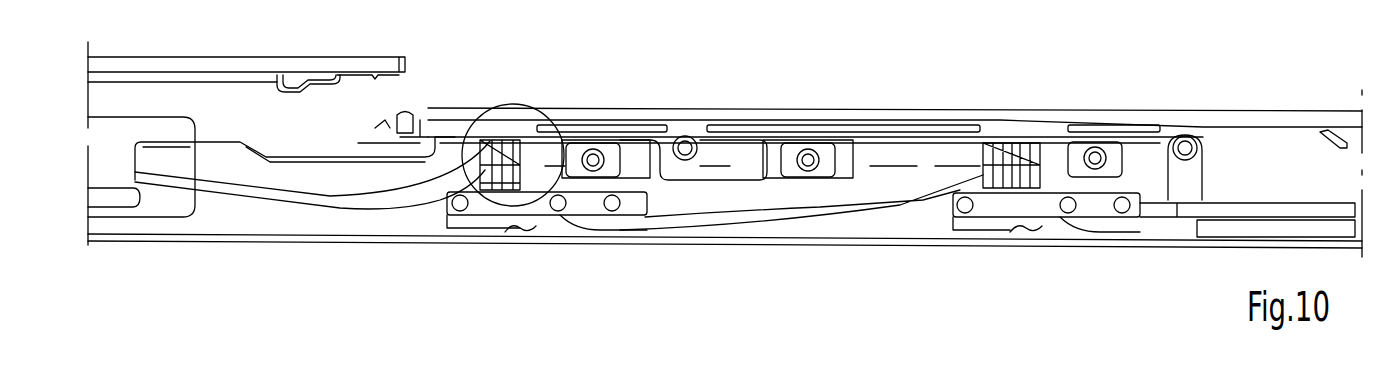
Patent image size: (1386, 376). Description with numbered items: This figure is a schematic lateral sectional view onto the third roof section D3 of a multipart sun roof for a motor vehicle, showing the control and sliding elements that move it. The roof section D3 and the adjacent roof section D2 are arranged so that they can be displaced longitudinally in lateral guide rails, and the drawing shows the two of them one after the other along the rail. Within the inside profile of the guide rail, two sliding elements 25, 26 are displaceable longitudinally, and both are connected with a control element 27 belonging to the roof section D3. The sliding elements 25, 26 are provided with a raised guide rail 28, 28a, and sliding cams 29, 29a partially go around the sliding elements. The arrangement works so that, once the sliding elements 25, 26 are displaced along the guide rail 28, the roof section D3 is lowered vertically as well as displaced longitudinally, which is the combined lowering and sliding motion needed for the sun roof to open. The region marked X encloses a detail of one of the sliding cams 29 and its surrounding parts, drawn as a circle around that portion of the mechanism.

The sliding element 25 is at (475, 208).
The sliding element 26 is at (1053, 225).
The control element 27 is at (293, 172).
The raised guide rail 28 is at (315, 197).
The raised guide rail 28a is at (853, 215).
The sliding cam 29 is at (500, 140).
The sliding cam 29a is at (520, 195).
The roof section D2 is at (237, 65).
The roof section D3 is at (855, 120).
The detail region X is at (560, 107).